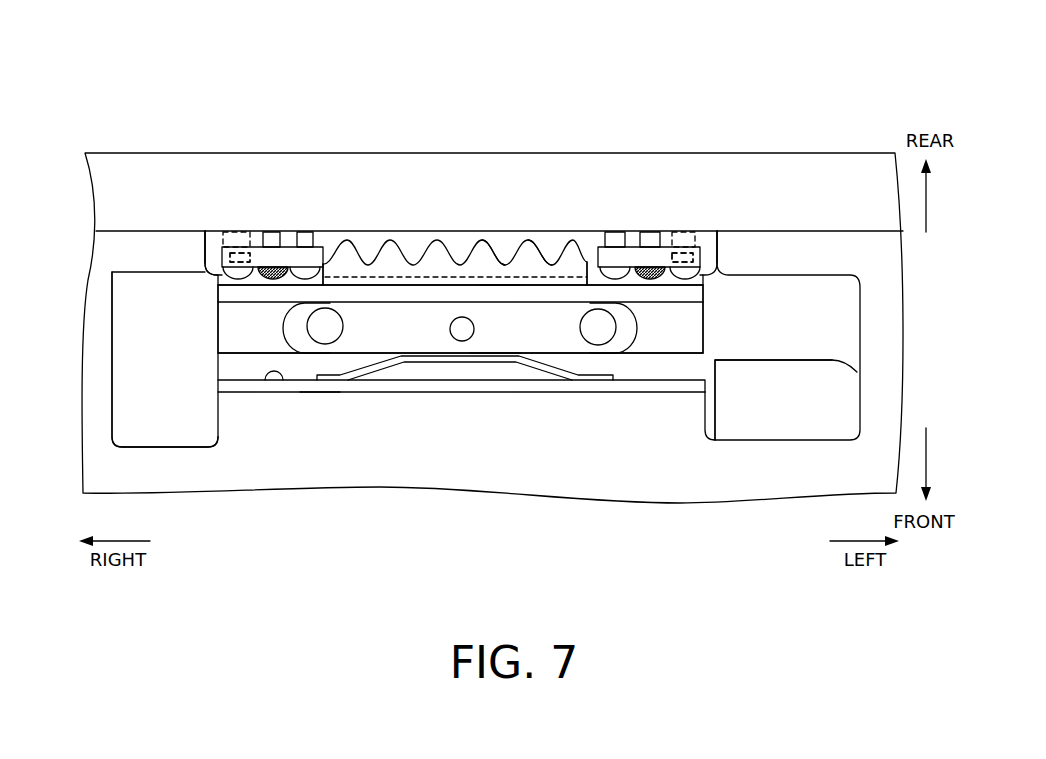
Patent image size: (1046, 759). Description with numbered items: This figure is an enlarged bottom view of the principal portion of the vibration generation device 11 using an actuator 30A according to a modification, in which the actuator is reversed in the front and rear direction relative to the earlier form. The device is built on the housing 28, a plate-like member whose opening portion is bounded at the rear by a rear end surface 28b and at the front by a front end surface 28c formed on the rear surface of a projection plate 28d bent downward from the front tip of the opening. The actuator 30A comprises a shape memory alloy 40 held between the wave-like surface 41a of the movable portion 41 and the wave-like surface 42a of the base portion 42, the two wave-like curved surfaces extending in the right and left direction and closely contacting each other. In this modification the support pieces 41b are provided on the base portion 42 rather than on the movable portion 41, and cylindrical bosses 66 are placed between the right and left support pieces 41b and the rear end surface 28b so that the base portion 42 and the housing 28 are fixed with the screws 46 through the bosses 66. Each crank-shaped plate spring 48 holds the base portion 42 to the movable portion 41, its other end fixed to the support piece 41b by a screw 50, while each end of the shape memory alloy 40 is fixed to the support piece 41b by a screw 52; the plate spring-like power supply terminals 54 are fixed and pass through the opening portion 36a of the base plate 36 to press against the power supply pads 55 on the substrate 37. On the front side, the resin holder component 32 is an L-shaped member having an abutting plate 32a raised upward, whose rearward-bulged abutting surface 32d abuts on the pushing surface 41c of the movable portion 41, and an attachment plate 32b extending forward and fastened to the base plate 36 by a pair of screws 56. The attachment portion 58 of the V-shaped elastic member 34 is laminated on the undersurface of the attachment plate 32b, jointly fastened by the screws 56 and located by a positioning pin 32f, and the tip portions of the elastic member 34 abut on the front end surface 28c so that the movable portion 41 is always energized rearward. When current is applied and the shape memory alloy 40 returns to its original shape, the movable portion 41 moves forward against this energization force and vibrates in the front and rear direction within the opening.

The vibration generation device 11 is at (135, 375).
The housing 28 is at (779, 490).
The rear end surface 28b is at (553, 258).
The front end surface 28c is at (283, 380).
The projection plate 28d is at (320, 393).
The actuator 30A is at (475, 110).
The holder component 32 is at (242, 364).
The abutting plate 32a is at (222, 297).
The attachment plate 32b is at (218, 306).
The abutting surface 32d is at (490, 286).
The positioning pin 32f is at (494, 356).
The elastic member 34 is at (450, 393).
The base plate 36 is at (822, 328).
The opening portion 36a is at (857, 372).
The substrate 37 is at (112, 303).
The shape memory alloy 40 is at (412, 258).
The movable portion 41 is at (439, 240).
The wave-like surface 41a is at (501, 254).
The support piece 41b is at (205, 268).
The pushing surface 41c is at (508, 393).
The base portion 42 is at (372, 250).
The wave-like surface 42a is at (532, 262).
The screw 46 is at (205, 270).
The plate spring 48 is at (322, 280).
The screw 50 is at (273, 232).
The screw 52 is at (308, 232).
The power supply terminal 54 is at (236, 250).
The power supply pad 55 is at (461, 257).
The screw 56 is at (343, 323).
The attachment portion 58 is at (386, 366).
The boss 66 is at (247, 232).